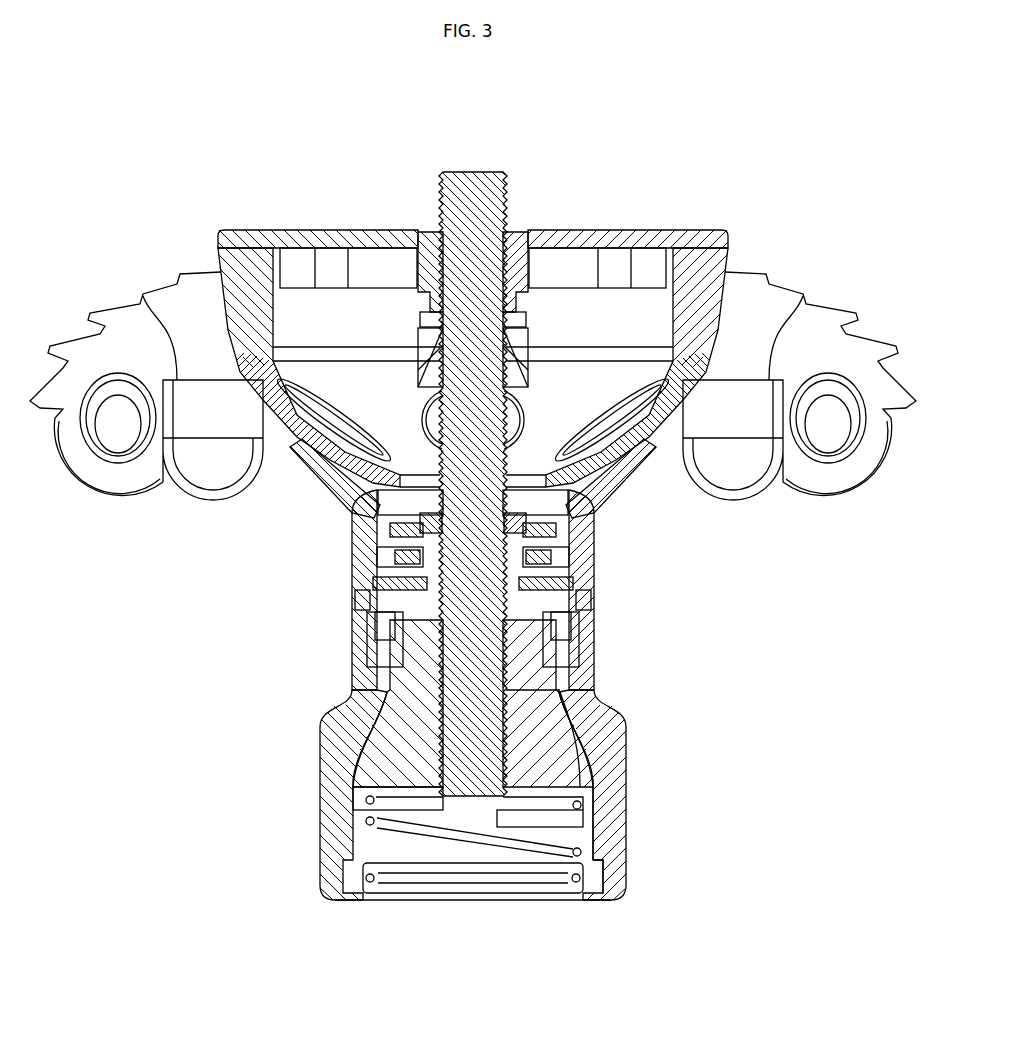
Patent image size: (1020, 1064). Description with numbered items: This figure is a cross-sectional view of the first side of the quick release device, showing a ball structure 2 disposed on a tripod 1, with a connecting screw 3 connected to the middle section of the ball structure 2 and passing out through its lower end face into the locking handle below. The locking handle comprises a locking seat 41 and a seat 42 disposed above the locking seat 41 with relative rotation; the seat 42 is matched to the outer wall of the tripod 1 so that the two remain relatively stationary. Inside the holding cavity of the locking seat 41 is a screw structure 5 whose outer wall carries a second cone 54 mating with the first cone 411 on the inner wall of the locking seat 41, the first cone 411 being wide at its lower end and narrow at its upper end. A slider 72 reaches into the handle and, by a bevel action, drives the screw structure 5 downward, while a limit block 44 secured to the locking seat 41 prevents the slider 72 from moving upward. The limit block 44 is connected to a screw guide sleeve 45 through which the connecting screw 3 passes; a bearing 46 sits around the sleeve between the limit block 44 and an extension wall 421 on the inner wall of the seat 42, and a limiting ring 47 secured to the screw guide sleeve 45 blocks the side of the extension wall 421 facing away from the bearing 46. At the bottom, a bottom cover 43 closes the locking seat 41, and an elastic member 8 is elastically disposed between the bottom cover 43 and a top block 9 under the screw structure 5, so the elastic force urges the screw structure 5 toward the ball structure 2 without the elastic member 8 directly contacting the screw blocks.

The tripod 1 is at (197, 300).
The ball structure 2 is at (703, 230).
The connecting screw 3 is at (507, 190).
The locking seat 41 is at (620, 713).
The first cone 411 is at (583, 757).
The seat 42 is at (627, 490).
The extension wall 421 is at (373, 542).
The bottom cover 43 is at (330, 880).
The limit block 44 is at (593, 612).
The screw guide sleeve 45 is at (357, 603).
The bearing 46 is at (383, 560).
The limiting ring 47 is at (340, 507).
The screw structure 5 is at (407, 733).
The second cone 54 is at (560, 700).
The slider 72 is at (350, 655).
The elastic member 8 is at (600, 833).
The top block 9 is at (353, 807).